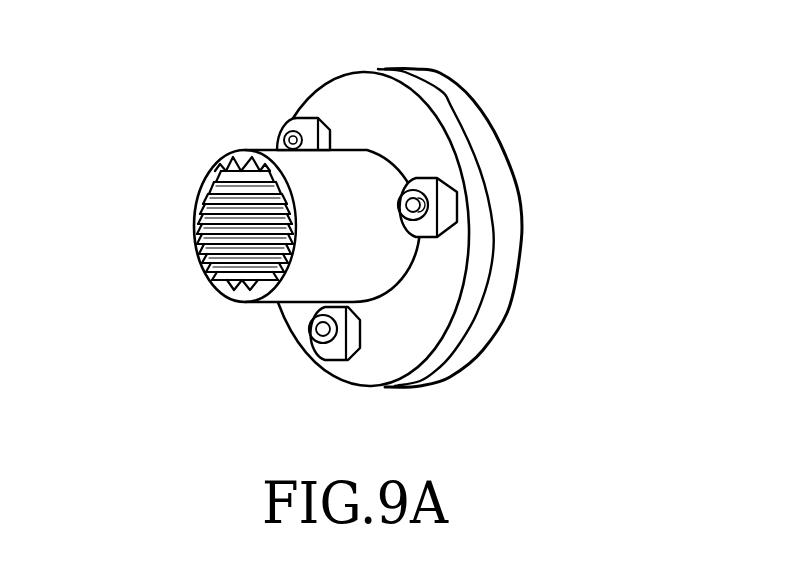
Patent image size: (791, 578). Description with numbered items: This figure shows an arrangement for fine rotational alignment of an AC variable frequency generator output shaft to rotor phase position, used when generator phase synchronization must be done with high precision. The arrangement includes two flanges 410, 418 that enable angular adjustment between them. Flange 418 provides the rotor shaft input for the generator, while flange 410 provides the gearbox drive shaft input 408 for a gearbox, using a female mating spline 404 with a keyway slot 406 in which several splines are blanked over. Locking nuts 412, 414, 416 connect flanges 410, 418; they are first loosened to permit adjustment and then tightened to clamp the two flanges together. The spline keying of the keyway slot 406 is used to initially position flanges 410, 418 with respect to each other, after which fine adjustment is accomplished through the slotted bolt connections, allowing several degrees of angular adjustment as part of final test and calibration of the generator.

The female mating spline 404 is at (252, 218).
The keyway slot 406 is at (256, 270).
The gearbox drive shaft input 408 is at (347, 192).
The flange 410 is at (480, 178).
The locking nut 412 is at (300, 110).
The locking nut 414 is at (343, 354).
The locking nut 416 is at (443, 207).
The flange 418 is at (477, 117).